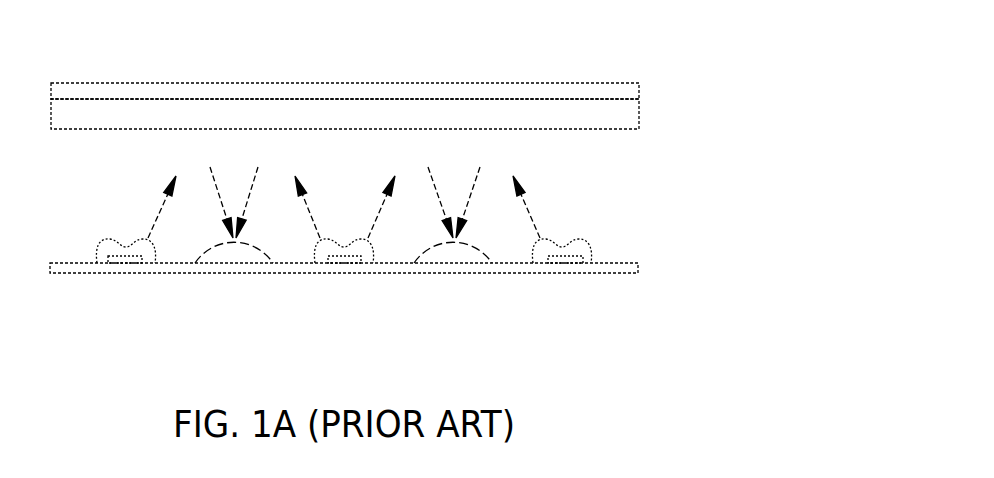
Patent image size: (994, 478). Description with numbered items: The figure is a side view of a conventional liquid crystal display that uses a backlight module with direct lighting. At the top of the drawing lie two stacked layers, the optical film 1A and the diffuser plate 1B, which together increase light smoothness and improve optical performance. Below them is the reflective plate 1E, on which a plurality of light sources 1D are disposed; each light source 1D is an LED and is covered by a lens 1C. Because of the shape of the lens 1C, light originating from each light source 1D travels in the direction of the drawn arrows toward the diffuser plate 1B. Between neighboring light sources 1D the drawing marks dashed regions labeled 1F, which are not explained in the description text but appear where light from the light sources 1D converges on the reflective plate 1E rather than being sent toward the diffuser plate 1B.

The optical film 1A is at (635, 92).
The diffuser plate 1B is at (635, 115).
The lens 1C is at (578, 247).
The light source 1D is at (568, 260).
The reflective plate 1E is at (637, 267).
The dark region (light-deficient zone) 1F is at (453, 243).